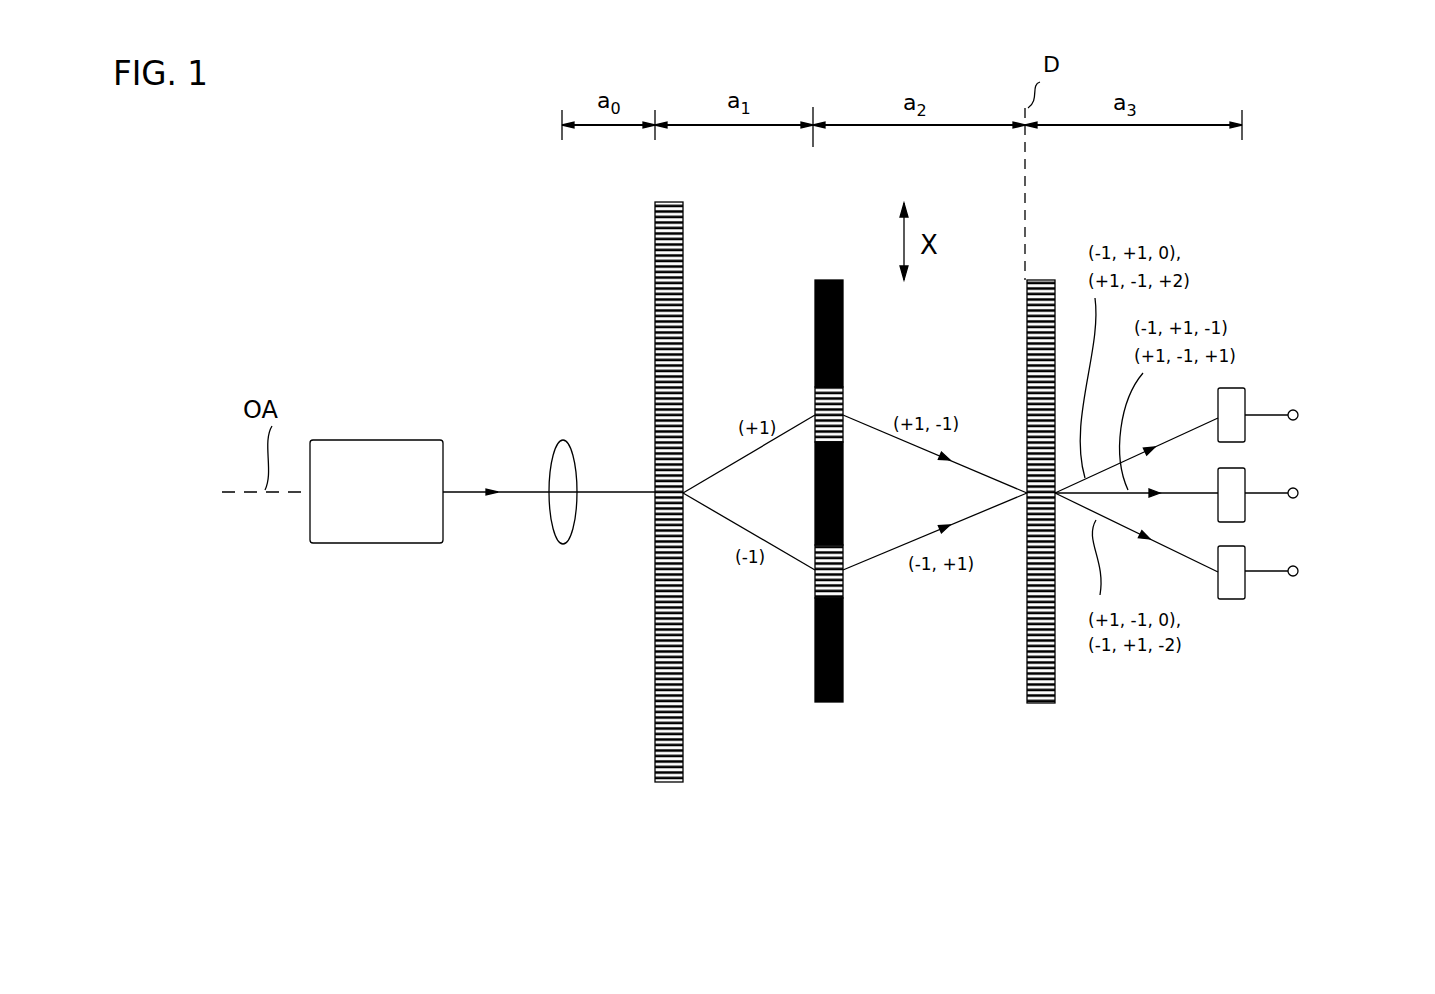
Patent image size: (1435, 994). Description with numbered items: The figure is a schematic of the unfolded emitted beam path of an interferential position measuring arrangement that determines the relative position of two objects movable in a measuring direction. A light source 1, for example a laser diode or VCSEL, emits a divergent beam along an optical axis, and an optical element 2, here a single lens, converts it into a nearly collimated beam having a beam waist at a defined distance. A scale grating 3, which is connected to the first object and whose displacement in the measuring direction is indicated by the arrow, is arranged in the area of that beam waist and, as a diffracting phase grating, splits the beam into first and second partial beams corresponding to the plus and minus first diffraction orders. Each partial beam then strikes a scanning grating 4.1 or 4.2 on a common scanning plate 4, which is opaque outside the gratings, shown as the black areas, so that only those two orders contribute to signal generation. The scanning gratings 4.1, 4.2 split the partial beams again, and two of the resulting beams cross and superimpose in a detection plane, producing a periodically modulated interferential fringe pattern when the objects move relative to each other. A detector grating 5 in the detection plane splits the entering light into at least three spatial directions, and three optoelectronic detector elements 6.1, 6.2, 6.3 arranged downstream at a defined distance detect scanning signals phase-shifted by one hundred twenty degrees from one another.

The light source 1 is at (378, 530).
The optical element 2 is at (567, 510).
The scale grating 3 is at (658, 722).
The scanning plate 4 is at (857, 543).
The scanning grating 4.1 is at (843, 327).
The scanning grating 4.2 is at (845, 640).
The detector grating 5 is at (1030, 652).
The optoelectronic detector element 6.1 is at (1240, 580).
The optoelectronic detector element 6.2 is at (1238, 505).
The optoelectronic detector element 6.3 is at (1240, 400).